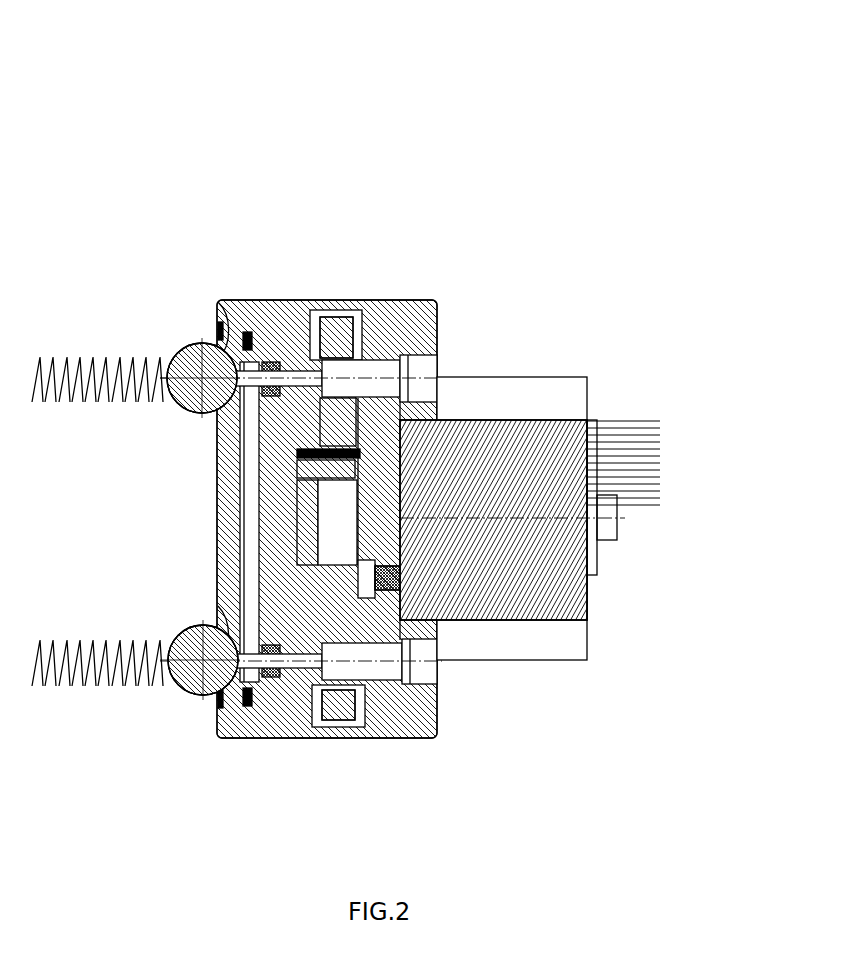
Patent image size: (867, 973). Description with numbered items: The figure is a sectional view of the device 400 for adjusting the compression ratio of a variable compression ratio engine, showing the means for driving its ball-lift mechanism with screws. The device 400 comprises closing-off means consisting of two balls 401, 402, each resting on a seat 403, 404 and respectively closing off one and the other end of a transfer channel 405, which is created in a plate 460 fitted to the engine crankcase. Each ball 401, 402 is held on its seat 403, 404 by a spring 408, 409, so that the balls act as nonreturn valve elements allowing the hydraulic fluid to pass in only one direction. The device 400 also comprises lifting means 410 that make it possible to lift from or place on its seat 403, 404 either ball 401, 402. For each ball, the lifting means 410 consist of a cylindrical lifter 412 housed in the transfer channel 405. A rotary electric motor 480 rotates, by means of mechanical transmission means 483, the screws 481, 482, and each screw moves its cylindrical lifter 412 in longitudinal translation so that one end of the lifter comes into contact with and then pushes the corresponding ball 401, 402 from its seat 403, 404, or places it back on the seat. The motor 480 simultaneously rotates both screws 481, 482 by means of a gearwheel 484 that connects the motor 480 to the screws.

The device for adjusting the compression ratio 400 is at (452, 172).
The lifting means 410 is at (334, 272).
The ball 401 is at (180, 405).
The ball 402 is at (185, 692).
The seat 403 is at (222, 303).
The seat 404 is at (222, 615).
The transfer channel 405 is at (250, 520).
The spring 408 is at (72, 353).
The spring 409 is at (62, 690).
The cylindrical lifter 412 is at (280, 378).
The plate 460 is at (295, 738).
The rotary electric motor 480 is at (568, 400).
The screw 481 is at (380, 375).
The screw 482 is at (385, 700).
The mechanical transmission means 483 is at (347, 345).
The gearwheel 484 is at (355, 452).